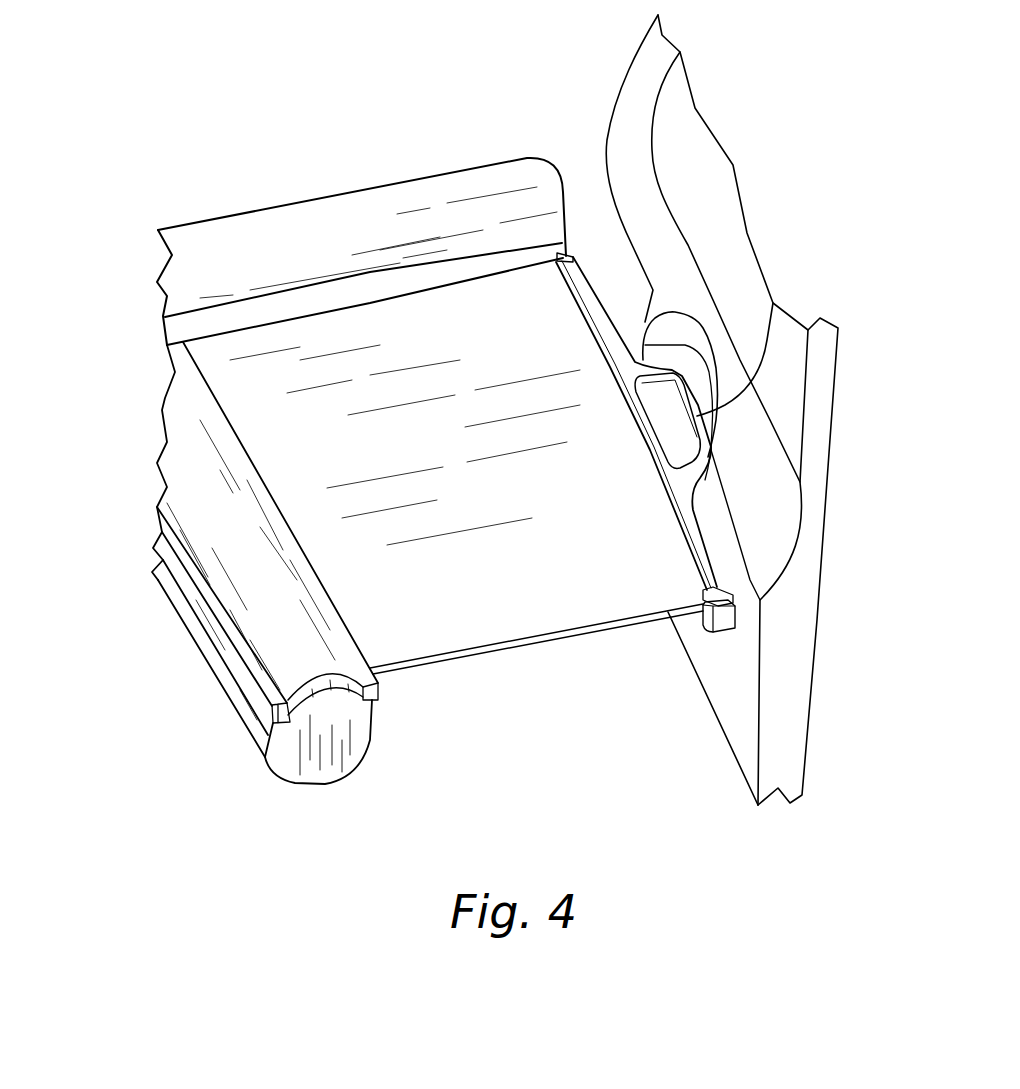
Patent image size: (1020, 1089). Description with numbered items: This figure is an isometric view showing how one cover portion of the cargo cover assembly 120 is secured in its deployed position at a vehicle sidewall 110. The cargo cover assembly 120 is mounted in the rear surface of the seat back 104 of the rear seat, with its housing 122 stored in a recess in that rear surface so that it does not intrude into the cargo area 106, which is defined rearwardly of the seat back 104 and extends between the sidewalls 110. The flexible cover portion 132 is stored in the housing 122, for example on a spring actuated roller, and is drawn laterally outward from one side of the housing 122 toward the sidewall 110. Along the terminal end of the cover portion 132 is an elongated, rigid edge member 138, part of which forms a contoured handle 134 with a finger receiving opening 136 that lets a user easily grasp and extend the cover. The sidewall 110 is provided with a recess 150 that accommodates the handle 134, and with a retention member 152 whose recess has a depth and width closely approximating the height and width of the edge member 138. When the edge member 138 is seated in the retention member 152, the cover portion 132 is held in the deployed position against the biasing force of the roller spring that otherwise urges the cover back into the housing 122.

The seat back 104 is at (375, 208).
The cargo area 106 is at (570, 797).
The sidewall 110 is at (782, 690).
The cargo cover assembly 120 is at (200, 705).
The housing 122 is at (323, 768).
The second cover portion 132 is at (407, 613).
The handle 134 is at (697, 413).
The finger receiving opening 136 is at (678, 430).
The edge member 138 is at (592, 316).
The recess 150 is at (678, 337).
The retention member 152 is at (730, 637).